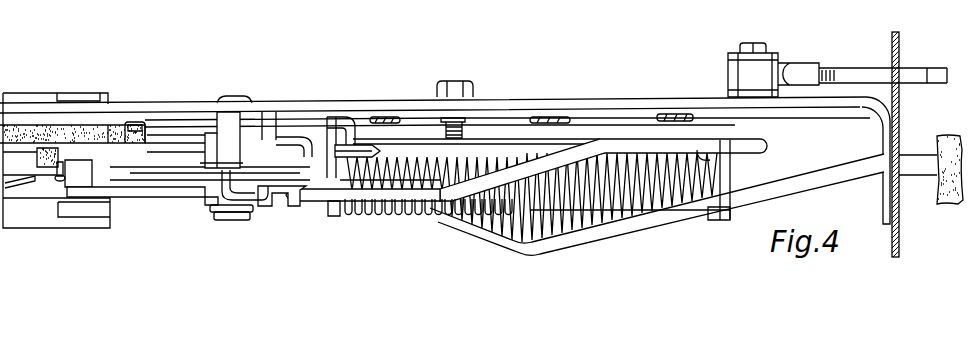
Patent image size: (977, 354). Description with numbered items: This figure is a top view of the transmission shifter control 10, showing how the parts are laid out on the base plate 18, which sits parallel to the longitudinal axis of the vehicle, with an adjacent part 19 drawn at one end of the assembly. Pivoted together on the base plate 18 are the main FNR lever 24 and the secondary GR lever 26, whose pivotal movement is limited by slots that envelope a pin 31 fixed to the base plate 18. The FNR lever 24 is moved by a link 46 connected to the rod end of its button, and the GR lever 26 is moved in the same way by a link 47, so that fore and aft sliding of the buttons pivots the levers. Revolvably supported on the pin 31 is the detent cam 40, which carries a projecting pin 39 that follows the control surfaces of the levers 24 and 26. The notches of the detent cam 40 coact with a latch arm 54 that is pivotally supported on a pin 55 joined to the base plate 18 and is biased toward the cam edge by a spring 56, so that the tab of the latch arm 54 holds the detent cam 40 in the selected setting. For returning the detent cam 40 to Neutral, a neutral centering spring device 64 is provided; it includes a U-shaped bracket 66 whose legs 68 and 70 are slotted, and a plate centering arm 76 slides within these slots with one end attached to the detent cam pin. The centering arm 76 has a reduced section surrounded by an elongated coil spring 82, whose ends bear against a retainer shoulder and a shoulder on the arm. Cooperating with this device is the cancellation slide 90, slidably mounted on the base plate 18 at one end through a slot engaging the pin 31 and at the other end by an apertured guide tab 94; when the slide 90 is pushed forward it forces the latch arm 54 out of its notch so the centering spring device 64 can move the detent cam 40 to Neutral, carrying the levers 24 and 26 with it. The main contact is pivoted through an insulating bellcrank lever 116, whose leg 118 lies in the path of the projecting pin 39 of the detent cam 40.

The transmission shifter control 10 is at (757, 40).
The base plate 18 is at (322, 103).
The wall plate 19 is at (912, 40).
The FNR lever 24 is at (230, 147).
The GR lever 26 is at (270, 122).
The pin 31 is at (235, 221).
The projecting pin 39 is at (135, 122).
The detent cam 40 is at (160, 185).
The link 46 is at (313, 200).
The link 47 is at (413, 130).
The latch arm 54 is at (72, 174).
The pin 55 is at (77, 215).
The spring 56 is at (32, 180).
The neutral centering spring device 64 is at (683, 220).
The U-shaped bracket 66 is at (509, 130).
The leg 68 is at (725, 163).
The leg 70 is at (338, 216).
The plate centering arm 76 is at (310, 185).
The elongated coil spring 82 is at (415, 212).
The cancellation slide 90 is at (583, 230).
The apertured guide tab 94 is at (884, 147).
The bellcrank lever 116 is at (58, 128).
The leg 118 is at (108, 128).